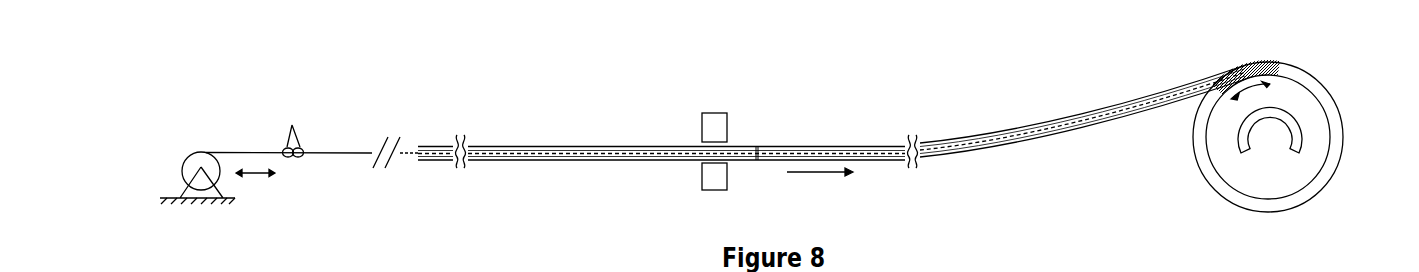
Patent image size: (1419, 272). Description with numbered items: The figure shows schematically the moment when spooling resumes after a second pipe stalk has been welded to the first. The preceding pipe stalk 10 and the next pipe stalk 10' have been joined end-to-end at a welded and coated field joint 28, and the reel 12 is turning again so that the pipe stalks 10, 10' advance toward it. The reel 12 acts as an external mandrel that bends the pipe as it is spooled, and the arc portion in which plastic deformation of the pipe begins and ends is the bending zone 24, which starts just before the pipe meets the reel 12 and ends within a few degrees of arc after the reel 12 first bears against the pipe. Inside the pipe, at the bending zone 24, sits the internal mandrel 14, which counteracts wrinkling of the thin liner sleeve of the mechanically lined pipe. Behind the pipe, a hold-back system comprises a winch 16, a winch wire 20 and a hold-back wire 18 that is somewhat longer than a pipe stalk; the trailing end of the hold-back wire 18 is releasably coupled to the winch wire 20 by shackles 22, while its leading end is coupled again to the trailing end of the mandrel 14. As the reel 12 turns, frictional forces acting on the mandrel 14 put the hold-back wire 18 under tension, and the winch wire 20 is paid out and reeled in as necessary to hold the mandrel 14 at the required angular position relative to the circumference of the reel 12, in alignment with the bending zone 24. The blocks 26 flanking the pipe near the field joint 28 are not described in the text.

The pipe stalk 10 is at (1125, 136).
The next pipe stalk 10' is at (661, 125).
The reel 12 is at (1308, 112).
The internal mandrel 14 is at (1227, 75).
The winch 16 is at (193, 165).
The hold-back wire 18 is at (367, 154).
The winch wire 20 is at (247, 152).
The shackles 22 is at (297, 125).
The bending zone 24 is at (1253, 63).
The guide blocks 26 is at (712, 127).
The field joint 28 is at (757, 150).